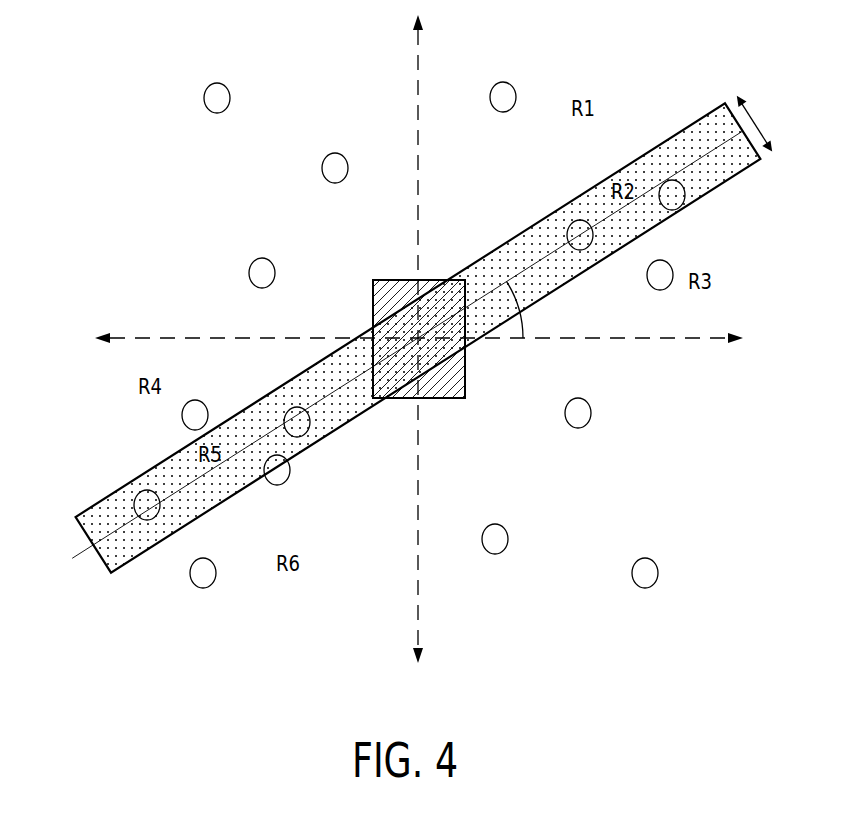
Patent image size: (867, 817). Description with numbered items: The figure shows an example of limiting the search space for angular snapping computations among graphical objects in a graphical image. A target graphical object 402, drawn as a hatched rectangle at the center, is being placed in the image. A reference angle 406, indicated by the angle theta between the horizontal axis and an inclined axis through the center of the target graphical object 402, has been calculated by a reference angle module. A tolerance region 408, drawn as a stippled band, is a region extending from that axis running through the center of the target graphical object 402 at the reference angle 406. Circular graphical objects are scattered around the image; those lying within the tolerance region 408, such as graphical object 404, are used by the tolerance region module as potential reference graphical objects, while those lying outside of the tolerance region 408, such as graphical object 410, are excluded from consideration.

The target graphical object 402 is at (381, 279).
The graphical object 404 is at (140, 492).
The reference angle 406 is at (566, 317).
The tolerance region 408 is at (665, 141).
The graphical object 410 is at (670, 263).